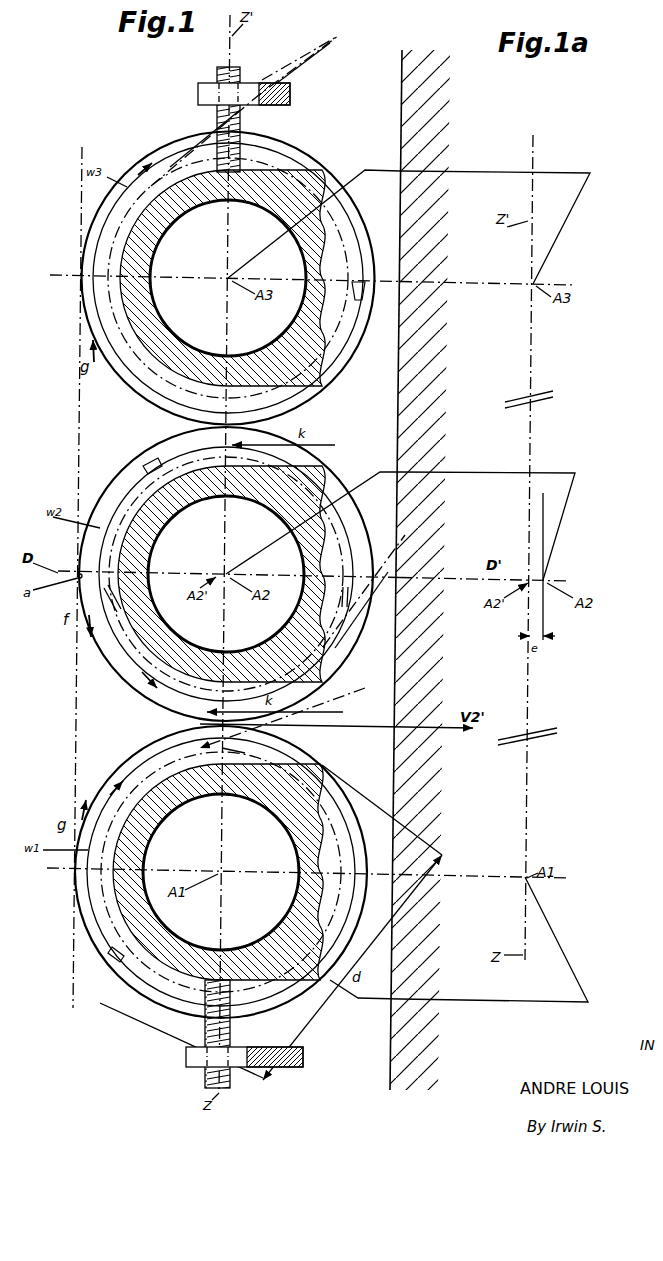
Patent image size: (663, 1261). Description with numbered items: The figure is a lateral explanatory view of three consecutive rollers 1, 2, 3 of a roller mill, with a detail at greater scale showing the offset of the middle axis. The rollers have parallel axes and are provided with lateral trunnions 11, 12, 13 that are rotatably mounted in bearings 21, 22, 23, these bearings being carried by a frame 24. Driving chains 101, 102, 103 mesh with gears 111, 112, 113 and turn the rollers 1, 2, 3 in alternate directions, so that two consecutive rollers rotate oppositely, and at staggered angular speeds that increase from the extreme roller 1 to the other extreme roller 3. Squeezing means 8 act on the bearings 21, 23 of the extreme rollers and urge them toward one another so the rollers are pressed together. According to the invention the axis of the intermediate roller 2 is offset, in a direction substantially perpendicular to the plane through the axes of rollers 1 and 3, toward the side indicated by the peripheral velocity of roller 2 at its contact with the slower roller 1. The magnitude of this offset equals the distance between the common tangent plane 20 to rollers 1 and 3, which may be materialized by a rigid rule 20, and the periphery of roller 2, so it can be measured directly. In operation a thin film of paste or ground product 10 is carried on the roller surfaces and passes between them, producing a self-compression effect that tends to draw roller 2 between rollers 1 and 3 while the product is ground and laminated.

The roller 1 is at (95, 943).
The intermediate roller 2 is at (113, 660).
The roller 3 is at (143, 392).
The squeezing means 8 is at (243, 126).
The film of paste or ground product 10 is at (100, 228).
The lateral trunnion 11 is at (170, 930).
The lateral trunnion 12 is at (198, 632).
The lateral trunnion 13 is at (160, 258).
The common tangent plane (rigid rule) 20 is at (78, 444).
The bearing 21 is at (265, 963).
The bearing 22 is at (277, 652).
The bearing 23 is at (282, 190).
The frame 24 is at (402, 93).
The driving chain 101 is at (258, 736).
The driving chain 102 is at (390, 553).
The driving chain 103 is at (323, 50).
The gear 111 is at (100, 888).
The gear 112 is at (200, 693).
The gear 113 is at (110, 303).